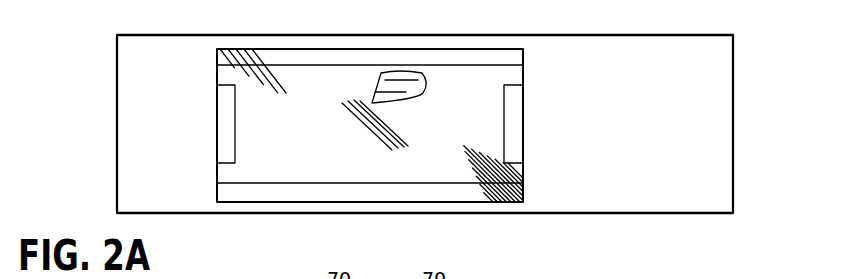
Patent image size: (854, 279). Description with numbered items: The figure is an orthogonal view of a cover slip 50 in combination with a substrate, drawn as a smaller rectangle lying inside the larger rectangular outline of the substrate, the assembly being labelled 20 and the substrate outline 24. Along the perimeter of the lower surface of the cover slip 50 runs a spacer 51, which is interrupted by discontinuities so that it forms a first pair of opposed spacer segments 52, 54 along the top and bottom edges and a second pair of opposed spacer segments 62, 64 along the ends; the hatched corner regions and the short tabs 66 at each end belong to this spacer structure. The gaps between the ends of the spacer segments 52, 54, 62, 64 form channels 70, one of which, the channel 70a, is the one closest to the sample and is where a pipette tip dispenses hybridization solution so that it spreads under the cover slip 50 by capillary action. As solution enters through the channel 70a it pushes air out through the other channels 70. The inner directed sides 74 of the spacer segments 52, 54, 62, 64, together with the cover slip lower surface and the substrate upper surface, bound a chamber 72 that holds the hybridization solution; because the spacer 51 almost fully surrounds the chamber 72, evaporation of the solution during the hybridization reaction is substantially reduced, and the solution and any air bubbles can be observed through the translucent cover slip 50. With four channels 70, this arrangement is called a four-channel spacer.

The sensor device 20 is at (90, 107).
The substrate 24 is at (734, 80).
The cover slip 50 is at (578, 107).
The spacer 51 is at (238, 100).
The spacer segment 52 is at (357, 73).
The spacer segment 54 is at (339, 183).
The spacer segment 62 is at (503, 130).
The spacer segment 64 is at (237, 115).
The tabs 66 is at (213, 78).
The channels 70 is at (511, 78).
The channel 70a is at (226, 73).
The chamber 72 is at (397, 77).
The inner directed sides 74 is at (236, 137).